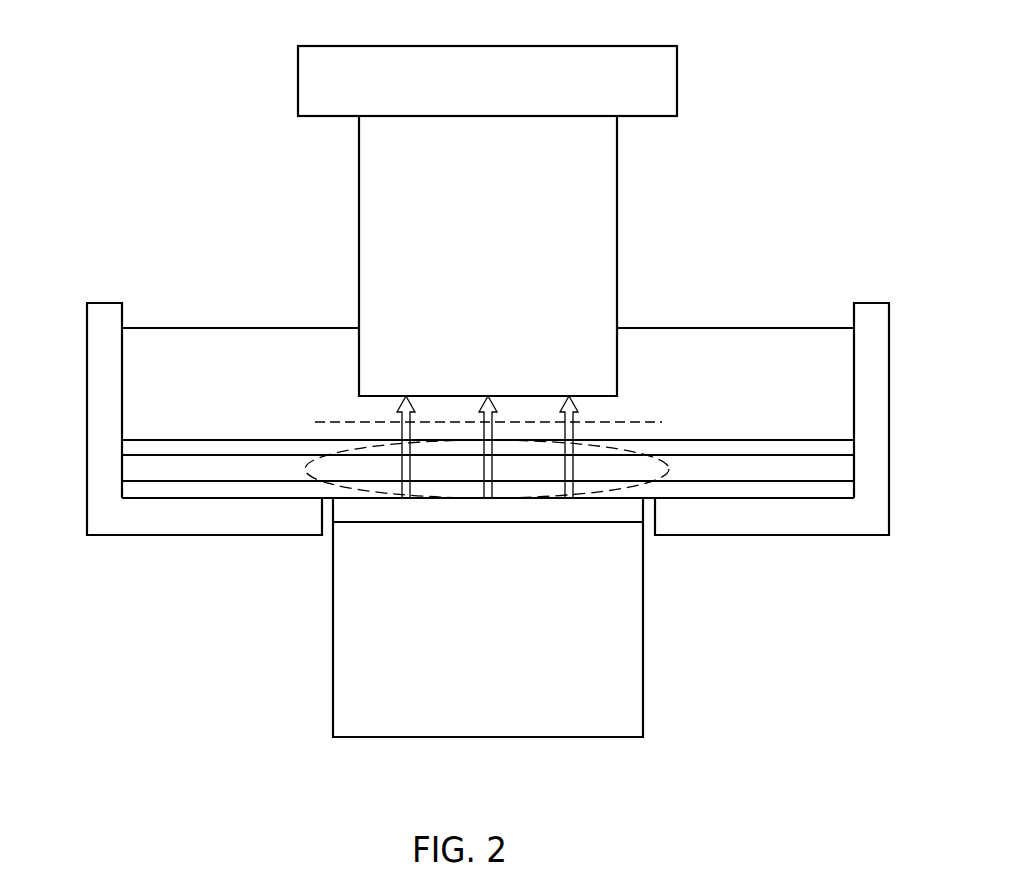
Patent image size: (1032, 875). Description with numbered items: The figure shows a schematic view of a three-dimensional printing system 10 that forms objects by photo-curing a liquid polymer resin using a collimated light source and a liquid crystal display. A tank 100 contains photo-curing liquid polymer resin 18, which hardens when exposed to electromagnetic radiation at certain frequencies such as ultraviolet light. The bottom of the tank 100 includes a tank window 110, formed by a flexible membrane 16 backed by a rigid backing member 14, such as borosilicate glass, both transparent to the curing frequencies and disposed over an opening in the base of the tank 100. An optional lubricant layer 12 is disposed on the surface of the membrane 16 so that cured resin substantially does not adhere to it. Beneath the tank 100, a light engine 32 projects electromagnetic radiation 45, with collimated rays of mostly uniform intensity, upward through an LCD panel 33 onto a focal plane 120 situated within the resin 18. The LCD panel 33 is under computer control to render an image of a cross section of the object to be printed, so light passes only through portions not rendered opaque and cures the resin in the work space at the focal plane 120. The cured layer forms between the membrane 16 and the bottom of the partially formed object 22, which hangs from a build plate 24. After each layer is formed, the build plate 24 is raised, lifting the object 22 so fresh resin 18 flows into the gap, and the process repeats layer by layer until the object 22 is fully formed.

The 3D printing system 10 is at (147, 91).
The build plate 24 is at (502, 91).
The 3D object 22 is at (502, 261).
The tank 100 is at (102, 328).
The photo-curing liquid polymer resin 18 is at (818, 398).
The lubricant layer 12 is at (125, 447).
The flexible membrane 16 is at (122, 469).
The rigid backing member 14 is at (123, 492).
The light engine 32 is at (502, 641).
The LCD panel 33 is at (367, 513).
The focal plane 120 is at (343, 422).
The tank window 110 is at (630, 448).
The electromagnetic radiation 45 is at (400, 468).